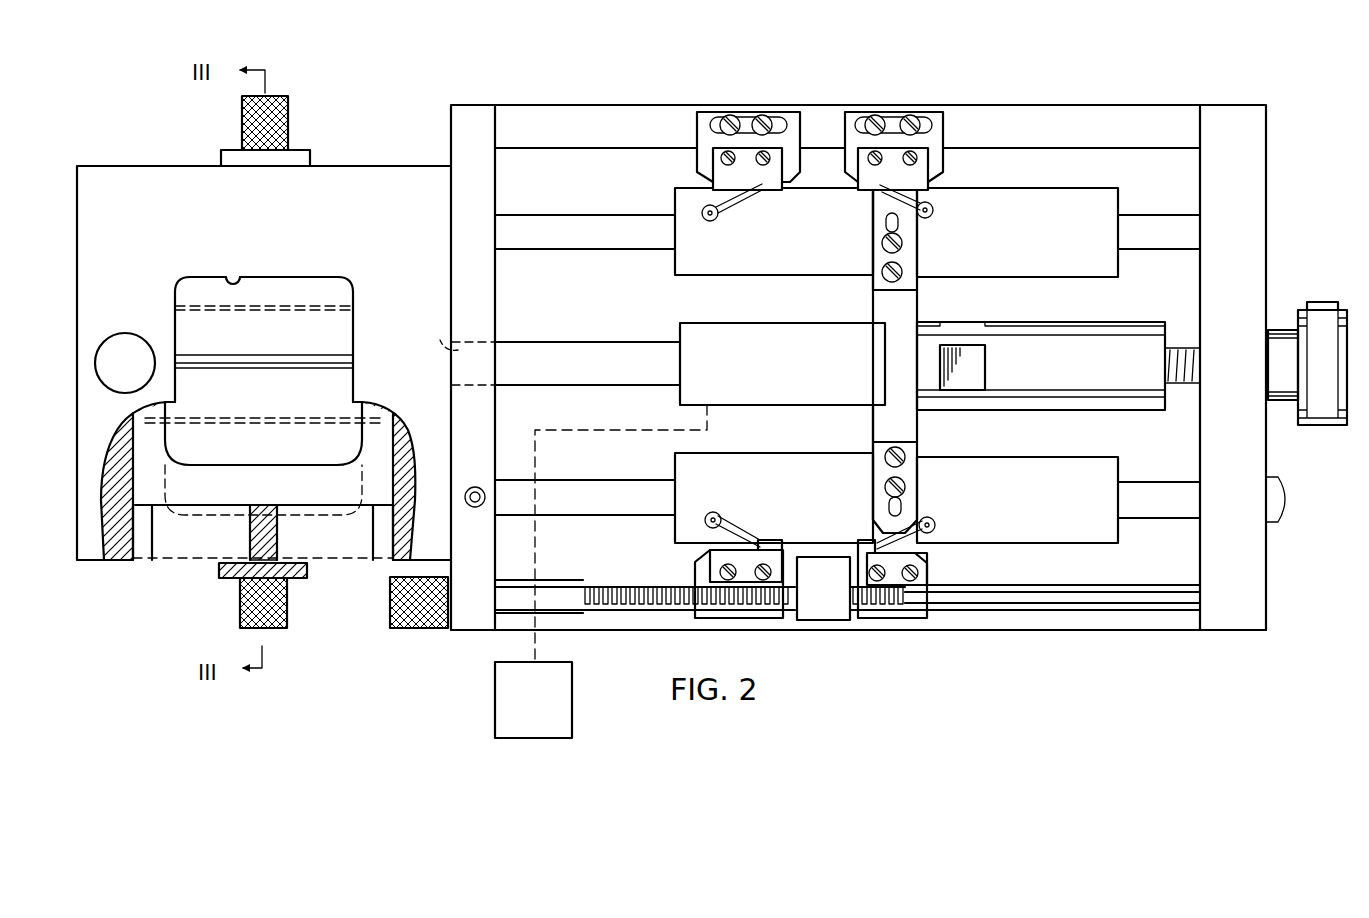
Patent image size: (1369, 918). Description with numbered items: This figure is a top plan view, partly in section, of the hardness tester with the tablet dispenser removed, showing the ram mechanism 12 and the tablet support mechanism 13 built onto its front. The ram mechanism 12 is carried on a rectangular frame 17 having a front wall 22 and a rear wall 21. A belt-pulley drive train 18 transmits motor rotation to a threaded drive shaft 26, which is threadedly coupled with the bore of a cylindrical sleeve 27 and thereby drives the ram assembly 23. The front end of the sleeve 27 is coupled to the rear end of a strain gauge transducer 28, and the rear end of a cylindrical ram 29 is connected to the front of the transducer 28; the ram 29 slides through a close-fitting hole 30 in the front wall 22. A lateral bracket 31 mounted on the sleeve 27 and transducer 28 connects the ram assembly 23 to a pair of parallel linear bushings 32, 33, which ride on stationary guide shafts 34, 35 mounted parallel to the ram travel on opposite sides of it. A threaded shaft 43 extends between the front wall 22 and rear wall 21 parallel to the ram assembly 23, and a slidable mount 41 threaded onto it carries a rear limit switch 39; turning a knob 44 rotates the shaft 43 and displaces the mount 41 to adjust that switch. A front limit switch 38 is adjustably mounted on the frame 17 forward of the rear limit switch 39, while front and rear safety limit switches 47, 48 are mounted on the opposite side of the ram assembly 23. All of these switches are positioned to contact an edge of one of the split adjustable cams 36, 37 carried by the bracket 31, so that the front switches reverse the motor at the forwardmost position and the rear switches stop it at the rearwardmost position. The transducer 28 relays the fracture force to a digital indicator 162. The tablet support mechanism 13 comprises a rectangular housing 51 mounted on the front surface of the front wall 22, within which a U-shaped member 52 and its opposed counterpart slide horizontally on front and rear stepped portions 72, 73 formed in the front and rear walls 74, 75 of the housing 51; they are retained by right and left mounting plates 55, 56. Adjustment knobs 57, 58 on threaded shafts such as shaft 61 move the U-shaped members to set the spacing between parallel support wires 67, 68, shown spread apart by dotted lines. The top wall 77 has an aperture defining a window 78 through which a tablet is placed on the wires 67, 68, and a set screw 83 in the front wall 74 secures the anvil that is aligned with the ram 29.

The ram mechanism 12 is at (1107, 102).
The tablet support mechanism 13 is at (170, 162).
The frame 17 is at (1222, 634).
The belt-pulley drive train 18 is at (1318, 316).
The rear wall 21 is at (1250, 585).
The front wall 22 is at (467, 116).
The ram assembly 23 is at (1116, 414).
The threaded drive shaft 26 is at (1188, 350).
The cylindrical sleeve 27 is at (1008, 341).
The strain gauge transducer 28 is at (765, 344).
The cylindrical ram 29 is at (608, 353).
The hole 30 is at (440, 340).
The lateral bracket 31 is at (905, 433).
The linear bushing 32 is at (1038, 204).
The linear bushing 33 is at (1030, 535).
The guide shaft 34 is at (600, 222).
The guide shaft 35 is at (600, 504).
The split adjustable cam 36 is at (915, 241).
The split adjustable cam 37 is at (910, 503).
The front limit switch 38 is at (705, 541).
The rear limit switch 39 is at (931, 536).
The slidable mount 41 is at (828, 622).
The threaded shaft 43 is at (968, 604).
The knob 44 is at (410, 616).
The front safety limit switch 47 is at (730, 200).
The rear safety limit switch 48 is at (860, 198).
The rectangular housing 51 is at (135, 183).
The U-shaped member 52 is at (208, 496).
The mounting plate 55 is at (298, 580).
The mounting plate 56 is at (310, 161).
The adjustment knob 57 is at (243, 608).
The adjustment knob 58 is at (282, 112).
The threaded shaft 61 is at (279, 527).
The wire 67 is at (253, 368).
The wire 68 is at (302, 306).
The stepped portion 72 is at (143, 566).
The stepped portion 73 is at (381, 562).
The front wall 74 is at (118, 528).
The rear wall 75 is at (405, 531).
The top wall 77 is at (381, 186).
The window 78 is at (234, 282).
The set screw 83 is at (123, 350).
The digital indicator 162 is at (530, 736).